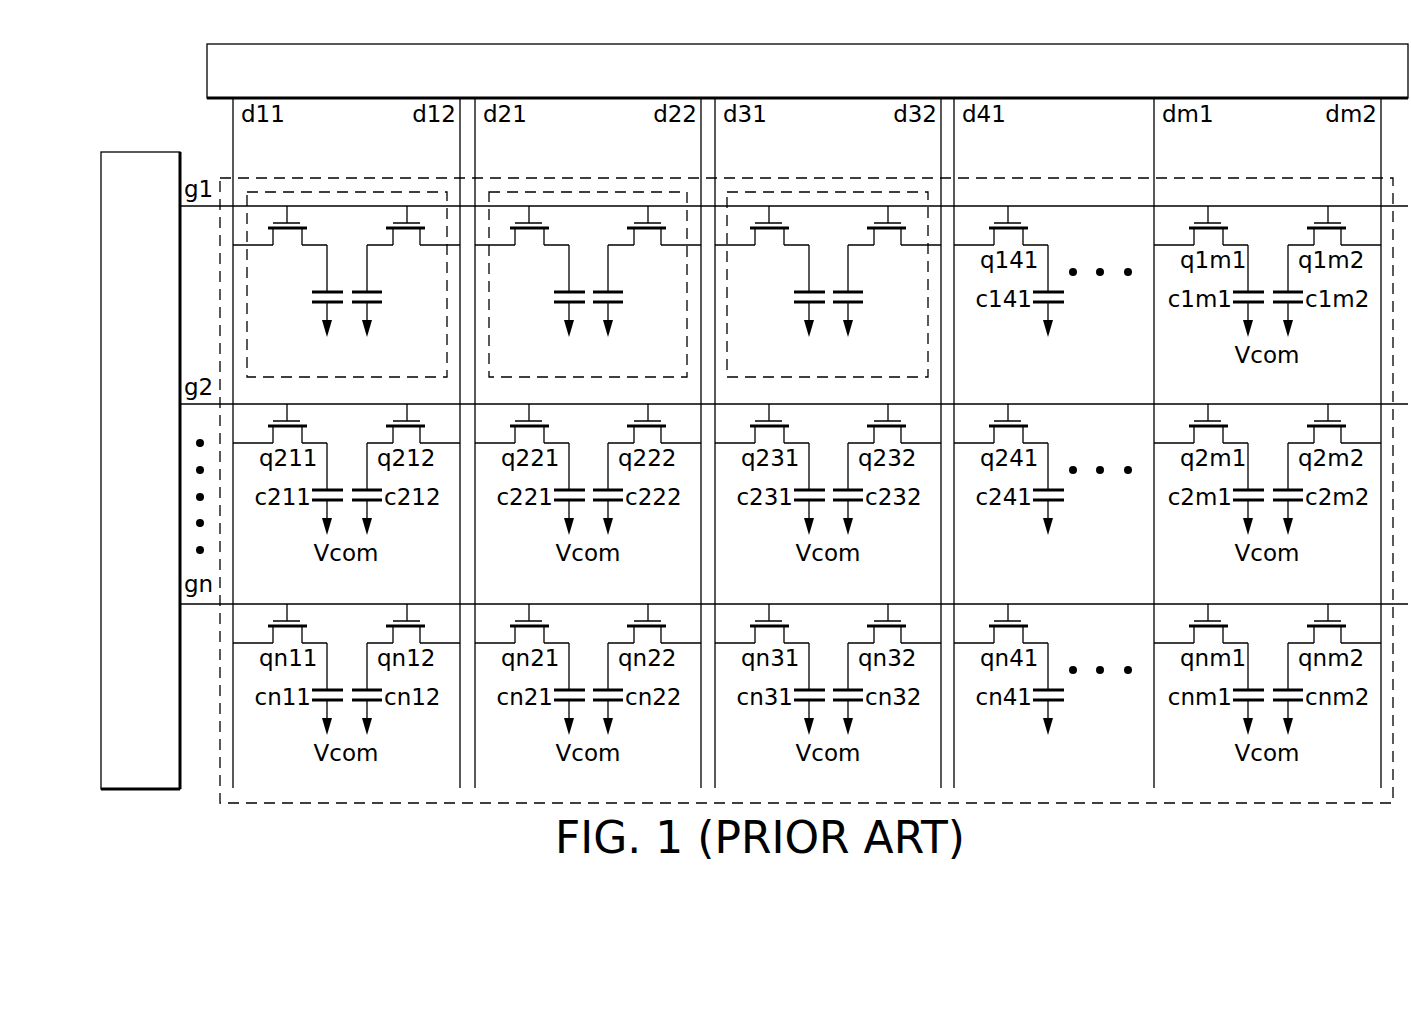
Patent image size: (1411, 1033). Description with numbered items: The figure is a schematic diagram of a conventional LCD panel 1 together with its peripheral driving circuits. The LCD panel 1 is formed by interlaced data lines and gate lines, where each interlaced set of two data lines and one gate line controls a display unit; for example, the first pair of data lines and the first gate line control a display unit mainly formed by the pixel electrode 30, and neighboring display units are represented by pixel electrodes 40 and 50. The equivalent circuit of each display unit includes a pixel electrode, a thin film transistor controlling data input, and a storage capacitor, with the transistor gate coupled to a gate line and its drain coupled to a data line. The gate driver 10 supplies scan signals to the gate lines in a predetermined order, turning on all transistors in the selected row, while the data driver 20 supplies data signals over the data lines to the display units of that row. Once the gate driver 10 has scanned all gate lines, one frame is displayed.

The LCD panel 1 is at (1247, 178).
The gate driver 10 is at (128, 152).
The data driver 20 is at (207, 68).
The pixel electrode 30 is at (345, 192).
The pixel electrode 40 is at (586, 192).
The pixel electrode 50 is at (826, 192).